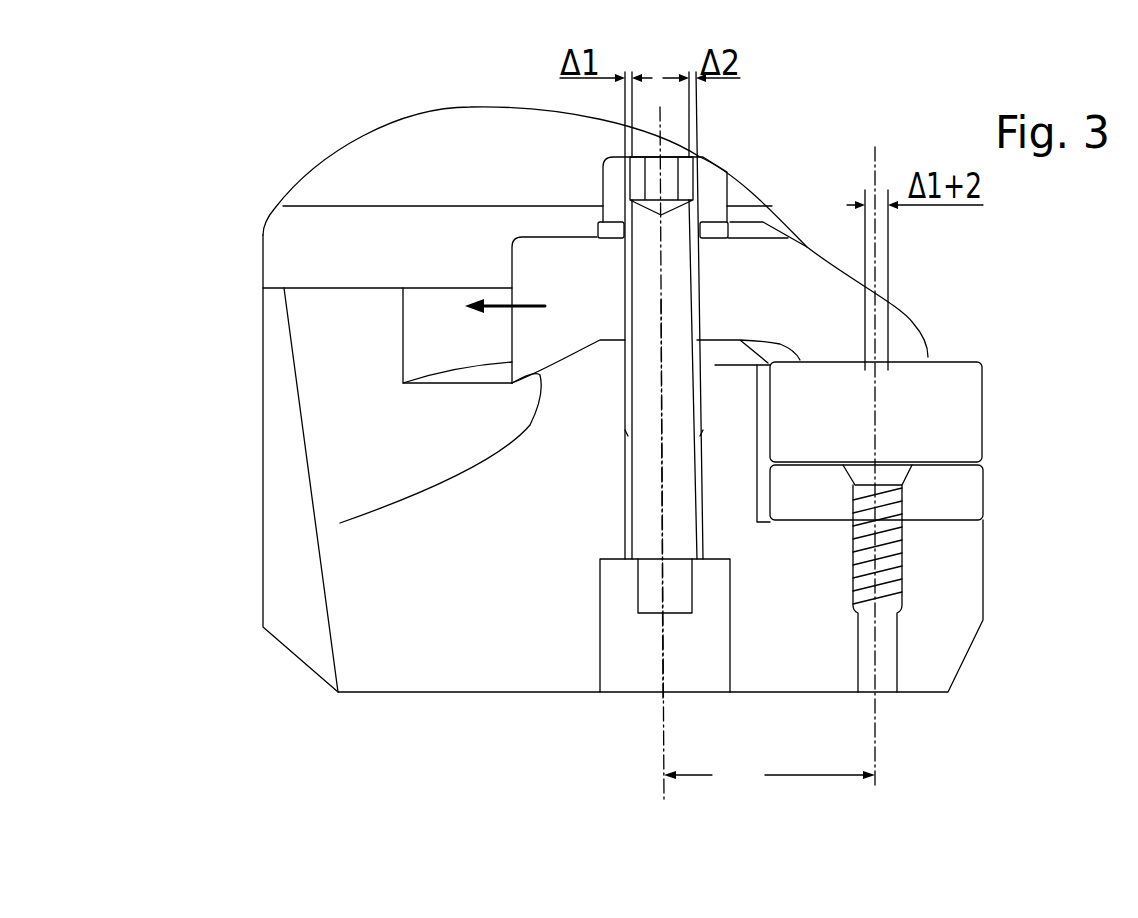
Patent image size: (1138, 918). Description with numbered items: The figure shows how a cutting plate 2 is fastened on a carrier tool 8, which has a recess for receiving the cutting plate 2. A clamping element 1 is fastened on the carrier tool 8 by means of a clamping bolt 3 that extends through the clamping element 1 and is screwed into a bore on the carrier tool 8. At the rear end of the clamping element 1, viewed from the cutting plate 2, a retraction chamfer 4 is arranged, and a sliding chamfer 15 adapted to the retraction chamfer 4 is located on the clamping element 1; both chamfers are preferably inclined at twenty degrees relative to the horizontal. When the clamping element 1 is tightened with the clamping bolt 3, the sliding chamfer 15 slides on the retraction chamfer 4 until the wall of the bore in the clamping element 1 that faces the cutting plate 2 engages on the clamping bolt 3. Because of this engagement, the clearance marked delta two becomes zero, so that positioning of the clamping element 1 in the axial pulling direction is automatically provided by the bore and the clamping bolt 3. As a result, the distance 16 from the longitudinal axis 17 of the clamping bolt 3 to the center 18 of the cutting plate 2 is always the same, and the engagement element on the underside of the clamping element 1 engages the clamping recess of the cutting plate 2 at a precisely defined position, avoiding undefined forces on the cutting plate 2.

The clamping element 1 is at (778, 295).
The cutting plate 2 is at (955, 415).
The clamping bolt 3 is at (643, 490).
The retraction chamfer 4 is at (540, 363).
The carrier tool 8 is at (328, 388).
The sliding chamfer 15 is at (340, 523).
The distance 16 is at (769, 777).
The longitudinal axis 17 is at (663, 730).
The center 18 is at (877, 177).